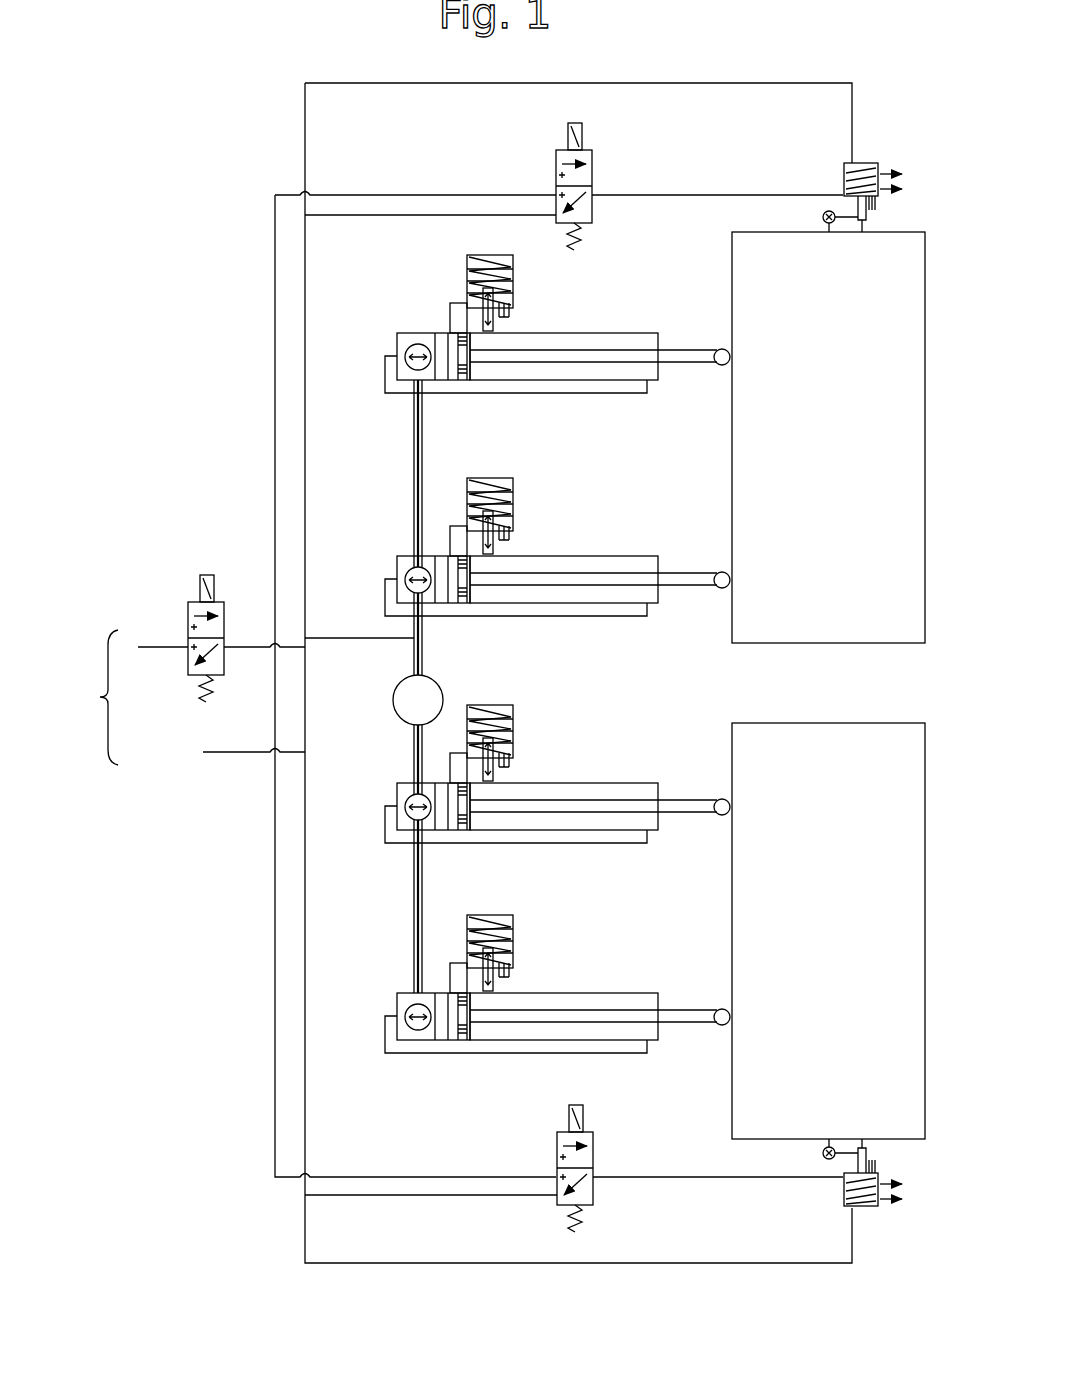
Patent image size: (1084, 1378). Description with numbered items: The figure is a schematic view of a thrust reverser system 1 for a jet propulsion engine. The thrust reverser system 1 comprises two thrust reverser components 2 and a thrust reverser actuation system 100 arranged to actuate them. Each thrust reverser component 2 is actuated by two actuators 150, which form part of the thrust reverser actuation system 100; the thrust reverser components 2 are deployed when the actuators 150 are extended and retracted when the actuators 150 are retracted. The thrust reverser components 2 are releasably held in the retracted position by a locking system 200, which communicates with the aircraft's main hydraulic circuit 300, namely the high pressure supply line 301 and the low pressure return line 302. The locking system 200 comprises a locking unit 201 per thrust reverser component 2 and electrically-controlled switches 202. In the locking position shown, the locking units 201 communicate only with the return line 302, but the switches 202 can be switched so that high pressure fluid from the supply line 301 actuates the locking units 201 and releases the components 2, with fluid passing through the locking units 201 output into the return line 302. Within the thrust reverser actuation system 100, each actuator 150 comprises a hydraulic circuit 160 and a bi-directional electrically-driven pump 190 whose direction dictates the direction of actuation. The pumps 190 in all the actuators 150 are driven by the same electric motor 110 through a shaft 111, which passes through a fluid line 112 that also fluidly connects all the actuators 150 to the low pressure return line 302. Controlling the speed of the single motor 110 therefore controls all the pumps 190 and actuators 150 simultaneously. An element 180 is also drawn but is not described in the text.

The thrust reverser system 1 is at (176, 955).
The thrust reverser component 2 is at (728, 256).
The thrust reverser actuation system 100 is at (383, 938).
The electric motor 110 is at (396, 690).
The shaft 111 is at (413, 475).
The fluid line 112 is at (410, 400).
The actuator 150 is at (610, 402).
The hydraulic circuit 160 is at (548, 394).
The spring accumulator 180 is at (522, 283).
The bi-directional electrically-driven pump 190 is at (412, 348).
The locking system 200 is at (748, 70).
The locking unit 201 is at (879, 152).
The electrically-controlled switch 202 is at (604, 157).
The main hydraulic circuit 300 is at (86, 697).
The high pressure supply line 301 is at (160, 660).
The low pressure return line 302 is at (232, 762).